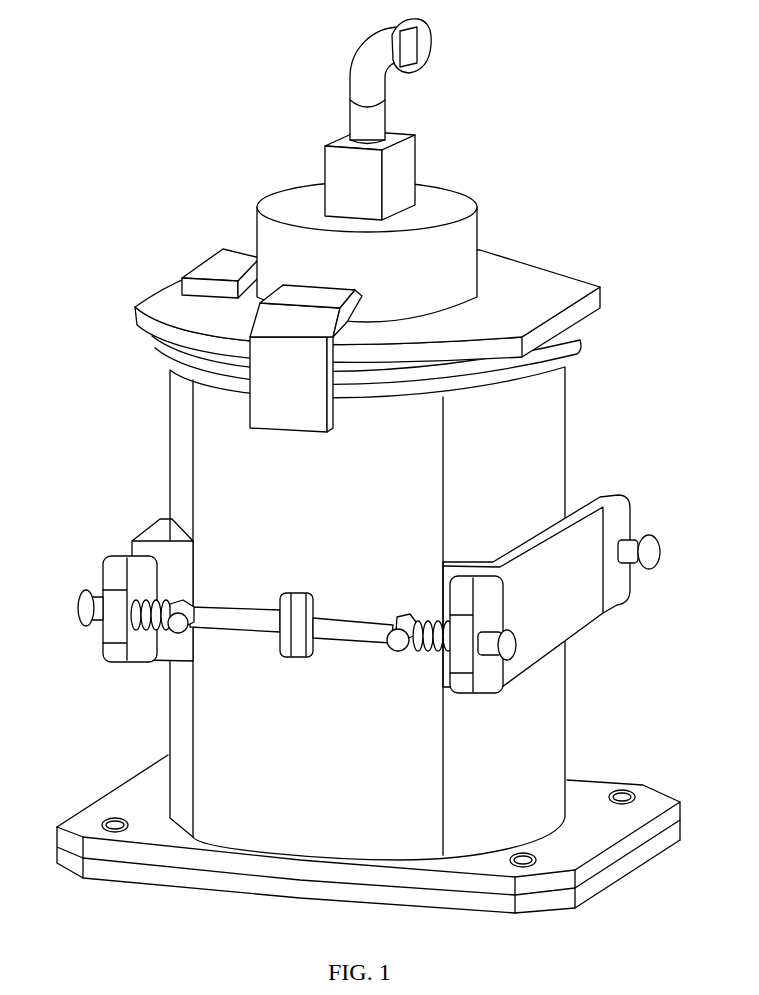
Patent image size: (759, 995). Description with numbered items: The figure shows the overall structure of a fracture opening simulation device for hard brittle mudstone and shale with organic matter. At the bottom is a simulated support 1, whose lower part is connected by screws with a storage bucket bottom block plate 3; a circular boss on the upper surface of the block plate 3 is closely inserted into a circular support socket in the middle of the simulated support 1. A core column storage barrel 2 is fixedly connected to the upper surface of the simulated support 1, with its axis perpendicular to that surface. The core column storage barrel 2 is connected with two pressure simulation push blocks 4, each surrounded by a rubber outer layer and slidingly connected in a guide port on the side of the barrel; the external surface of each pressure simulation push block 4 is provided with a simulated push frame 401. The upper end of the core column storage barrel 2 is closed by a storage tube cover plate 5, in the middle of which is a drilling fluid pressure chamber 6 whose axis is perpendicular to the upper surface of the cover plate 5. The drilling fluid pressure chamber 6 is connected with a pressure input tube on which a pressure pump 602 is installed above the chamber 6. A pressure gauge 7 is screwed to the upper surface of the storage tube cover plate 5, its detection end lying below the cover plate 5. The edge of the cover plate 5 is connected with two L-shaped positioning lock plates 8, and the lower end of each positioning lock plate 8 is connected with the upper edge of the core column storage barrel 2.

The simulated support 1 is at (597, 828).
The core column storage barrel 2 is at (322, 775).
The storage bucket bottom block plate 3 is at (127, 880).
The pressure simulation push block 4 is at (518, 490).
The simulated push frame 401 is at (570, 580).
The storage tube cover plate 5 is at (523, 302).
The drilling fluid pressure chamber 6 is at (297, 243).
The pressure pump 602 is at (368, 168).
The pressure gauge 7 is at (228, 272).
The positioning lock plate 8 is at (283, 400).